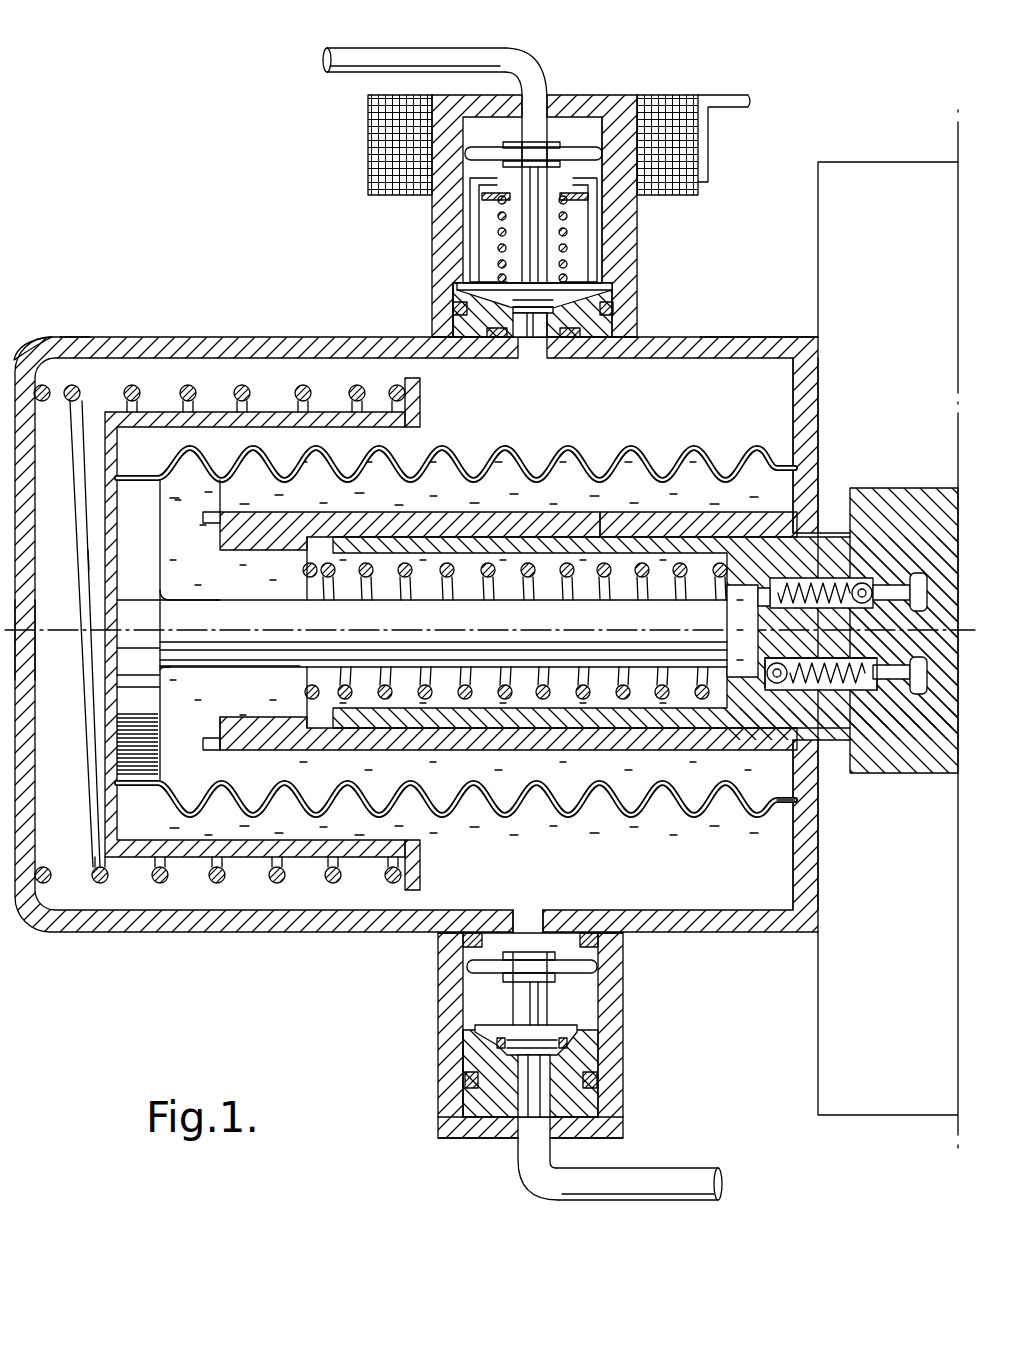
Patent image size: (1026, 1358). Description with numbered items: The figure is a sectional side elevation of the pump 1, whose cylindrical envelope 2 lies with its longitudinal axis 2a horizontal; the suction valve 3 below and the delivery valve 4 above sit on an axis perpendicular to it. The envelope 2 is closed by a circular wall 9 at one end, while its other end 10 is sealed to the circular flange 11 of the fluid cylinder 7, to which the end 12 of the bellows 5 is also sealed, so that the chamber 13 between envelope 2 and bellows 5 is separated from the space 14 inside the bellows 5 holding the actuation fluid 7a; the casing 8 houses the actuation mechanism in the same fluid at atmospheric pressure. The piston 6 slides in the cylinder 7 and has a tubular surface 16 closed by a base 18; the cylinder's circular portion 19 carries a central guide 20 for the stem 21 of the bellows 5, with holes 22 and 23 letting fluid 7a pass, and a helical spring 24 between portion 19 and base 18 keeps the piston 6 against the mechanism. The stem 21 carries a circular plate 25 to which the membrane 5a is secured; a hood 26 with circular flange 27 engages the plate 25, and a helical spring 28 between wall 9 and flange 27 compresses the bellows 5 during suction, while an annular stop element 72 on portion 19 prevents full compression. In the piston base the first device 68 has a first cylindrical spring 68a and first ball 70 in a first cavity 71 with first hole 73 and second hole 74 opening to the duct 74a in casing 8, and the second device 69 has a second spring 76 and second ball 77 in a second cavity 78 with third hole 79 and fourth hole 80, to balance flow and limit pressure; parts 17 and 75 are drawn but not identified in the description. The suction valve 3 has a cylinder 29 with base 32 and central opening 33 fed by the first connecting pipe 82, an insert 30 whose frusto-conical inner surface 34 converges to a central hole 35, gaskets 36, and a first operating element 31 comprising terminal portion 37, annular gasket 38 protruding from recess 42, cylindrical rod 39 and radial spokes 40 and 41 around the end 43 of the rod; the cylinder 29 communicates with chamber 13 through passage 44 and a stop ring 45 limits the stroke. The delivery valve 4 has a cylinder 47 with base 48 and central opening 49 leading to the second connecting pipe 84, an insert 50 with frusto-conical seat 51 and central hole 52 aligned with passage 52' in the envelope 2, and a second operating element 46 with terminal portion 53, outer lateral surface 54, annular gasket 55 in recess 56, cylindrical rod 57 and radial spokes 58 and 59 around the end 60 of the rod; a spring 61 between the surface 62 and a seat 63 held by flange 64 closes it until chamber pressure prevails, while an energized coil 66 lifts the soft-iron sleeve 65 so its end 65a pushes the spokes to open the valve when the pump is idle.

The pump 1 is at (79, 323).
The cylindrical envelope 2 is at (266, 345).
The longitudinal axis 2a is at (52, 640).
The suction valve 3 is at (425, 1025).
The delivery valve 4 is at (653, 336).
The bellows 5 is at (456, 815).
The membrane 5a is at (522, 465).
The piston 6 is at (828, 540).
The fluid cylinder 7 is at (230, 745).
The actuation fluid 7a is at (680, 480).
The casing 8 is at (905, 165).
The circular wall 9 is at (15, 355).
The other end of envelope 10 is at (755, 337).
The circular flange 11 is at (793, 398).
The end of bellows 12 is at (800, 800).
The chamber 13 is at (65, 558).
The space 14 is at (705, 795).
The tubular surface 16 is at (690, 712).
The shaft 17 is at (722, 602).
The base of piston 18 is at (725, 650).
The portion of circular shape 19 is at (213, 730).
The central guide 20 is at (318, 680).
The stem 21 is at (188, 655).
The hole 22 is at (230, 571).
The hole 23 is at (230, 708).
The helical spring 24 is at (582, 698).
The circular plate 25 is at (128, 602).
The hood 26 is at (100, 830).
The circular flange 27 is at (420, 866).
The helical spring 28 is at (198, 385).
The cylinder 29 is at (446, 1104).
The insert 30 is at (488, 1116).
The first operating element 31 is at (490, 1090).
The base 32 is at (488, 1140).
The central opening 33 is at (518, 1150).
The inner surface 34 is at (534, 1070).
The central hole 35 is at (545, 1062).
The gaskets 36 is at (600, 1080).
The terminal portion 37 is at (480, 1024).
The annular gasket 38 is at (505, 1046).
The cylindrical rod 39 is at (540, 1011).
The radial spoke 40 is at (524, 978).
The radial spoke 41 is at (598, 972).
The recess 42 is at (570, 1046).
The end of rod 43 is at (540, 976).
The passage 44 is at (540, 912).
The stop ring 45 is at (465, 940).
The second operating element 46 is at (535, 343).
The cylinder 47 is at (640, 100).
The base 48 is at (600, 100).
The central opening 49 is at (545, 98).
The insert 50 is at (468, 340).
The frusto-conical seat 51 is at (614, 315).
The central hole 52 is at (554, 360).
The passage 52' is at (560, 357).
The terminal portion 53 is at (525, 315).
The outer lateral surface 54 is at (497, 340).
The annular gasket 55 is at (470, 292).
The recess 56 is at (475, 300).
The cylindrical rod 57 is at (530, 253).
The radial spoke 58 is at (496, 172).
The radial spoke 59 is at (575, 152).
The end of rod 60 is at (520, 148).
The spring 61 is at (568, 232).
The surface 62 is at (570, 270).
The seat 63 is at (485, 210).
The flange 64 is at (608, 280).
The sleeve 65 is at (597, 205).
The end of sleeve 65a is at (482, 193).
The coil 66 is at (372, 141).
The first device 68 is at (868, 577).
The first cylindrical spring 68a is at (785, 540).
The second device 69 is at (918, 692).
The first ball 70 is at (862, 583).
The first cavity 71 is at (830, 538).
The stop element 72 is at (212, 512).
The first hole 73 is at (740, 585).
The second hole 74 is at (918, 566).
The duct 74a is at (938, 568).
The spring 75 is at (810, 692).
The second spring 76 is at (882, 692).
The second ball 77 is at (777, 684).
The second cylindrical cavity 78 is at (838, 660).
The third hole 79 is at (760, 692).
The fourth hole 80 is at (890, 665).
The first connecting pipe 82 is at (702, 1175).
The second connecting pipe 84 is at (405, 48).